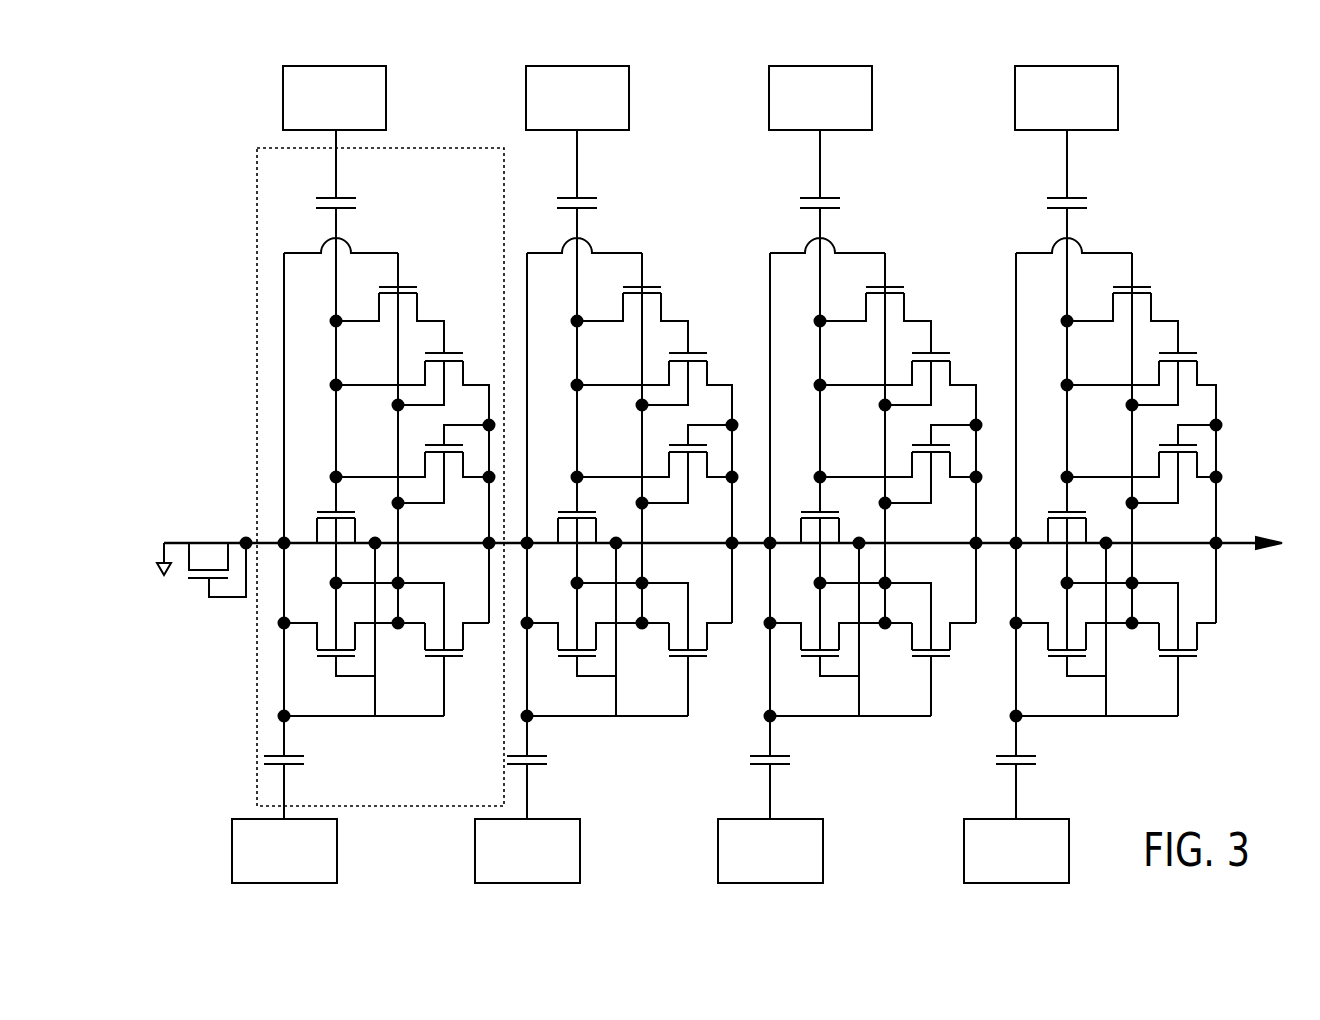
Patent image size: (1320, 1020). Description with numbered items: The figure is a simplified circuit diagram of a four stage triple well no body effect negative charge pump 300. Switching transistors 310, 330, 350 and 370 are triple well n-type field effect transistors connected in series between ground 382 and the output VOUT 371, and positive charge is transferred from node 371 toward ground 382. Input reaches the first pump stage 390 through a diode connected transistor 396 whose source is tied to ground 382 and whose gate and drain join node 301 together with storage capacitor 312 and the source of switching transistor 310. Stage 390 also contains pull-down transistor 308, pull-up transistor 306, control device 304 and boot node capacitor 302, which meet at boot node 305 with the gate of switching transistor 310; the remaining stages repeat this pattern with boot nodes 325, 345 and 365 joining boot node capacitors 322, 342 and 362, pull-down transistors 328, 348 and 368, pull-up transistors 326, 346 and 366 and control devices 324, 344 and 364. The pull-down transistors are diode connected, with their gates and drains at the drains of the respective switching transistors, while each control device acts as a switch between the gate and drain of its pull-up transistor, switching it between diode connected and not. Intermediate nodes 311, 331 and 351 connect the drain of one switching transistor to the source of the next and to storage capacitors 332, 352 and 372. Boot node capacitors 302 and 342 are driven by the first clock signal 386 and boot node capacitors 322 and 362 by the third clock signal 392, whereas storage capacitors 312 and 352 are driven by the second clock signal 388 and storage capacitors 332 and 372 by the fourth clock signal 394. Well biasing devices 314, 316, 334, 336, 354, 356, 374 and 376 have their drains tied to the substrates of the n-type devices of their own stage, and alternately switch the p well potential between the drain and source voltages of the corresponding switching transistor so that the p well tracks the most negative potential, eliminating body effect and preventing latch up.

The negative charge pump 300 is at (1158, 233).
The node 301 is at (243, 537).
The boot node capacitor 302 is at (322, 189).
The control device 304 is at (388, 307).
The boot node 305 is at (337, 461).
The pull-up transistor 306 is at (418, 488).
The pull-down transistor 308 is at (413, 464).
The switching transistor 310 is at (324, 550).
The node 311 is at (482, 538).
The storage capacitor 312 is at (297, 752).
The well biasing device 314 is at (352, 635).
The well biasing device 316 is at (413, 647).
The boot node capacitor 322 is at (563, 189).
The control device 324 is at (631, 307).
The boot node 325 is at (578, 461).
The pull-up transistor 326 is at (662, 488).
The pull-down transistor 328 is at (655, 464).
The switching transistor 330 is at (565, 550).
The node 331 is at (736, 538).
The storage capacitor 332 is at (540, 752).
The well biasing device 334 is at (596, 635).
The well biasing device 336 is at (656, 647).
The boot node capacitor 342 is at (806, 189).
The control device 344 is at (874, 307).
The boot node 345 is at (821, 461).
The pull-up transistor 346 is at (912, 488).
The pull-down transistor 348 is at (898, 464).
The switching transistor 350 is at (808, 550).
The node 351 is at (983, 538).
The storage capacitor 352 is at (783, 752).
The well biasing device 354 is at (839, 635).
The well biasing device 356 is at (899, 647).
The boot node capacitor 362 is at (1053, 189).
The control device 364 is at (1121, 307).
The boot node 365 is at (1068, 461).
The pull-up transistor 366 is at (1154, 488).
The pull-down transistor 368 is at (1142, 464).
The switching transistor 370 is at (1055, 550).
The VOUT 371 is at (1136, 480).
The storage capacitor 372 is at (1029, 752).
The well biasing device 374 is at (1085, 635).
The well biasing device 376 is at (1146, 647).
The ground 382 is at (177, 543).
The CLOCK 1 386 is at (577, 98).
The CLOCK 2 388 is at (527, 851).
The first pump stage 390 is at (440, 148).
The CLOCK 3 392 is at (822, 98).
The CLOCK 4 394 is at (772, 851).
The diode connected transistor 396 is at (205, 586).